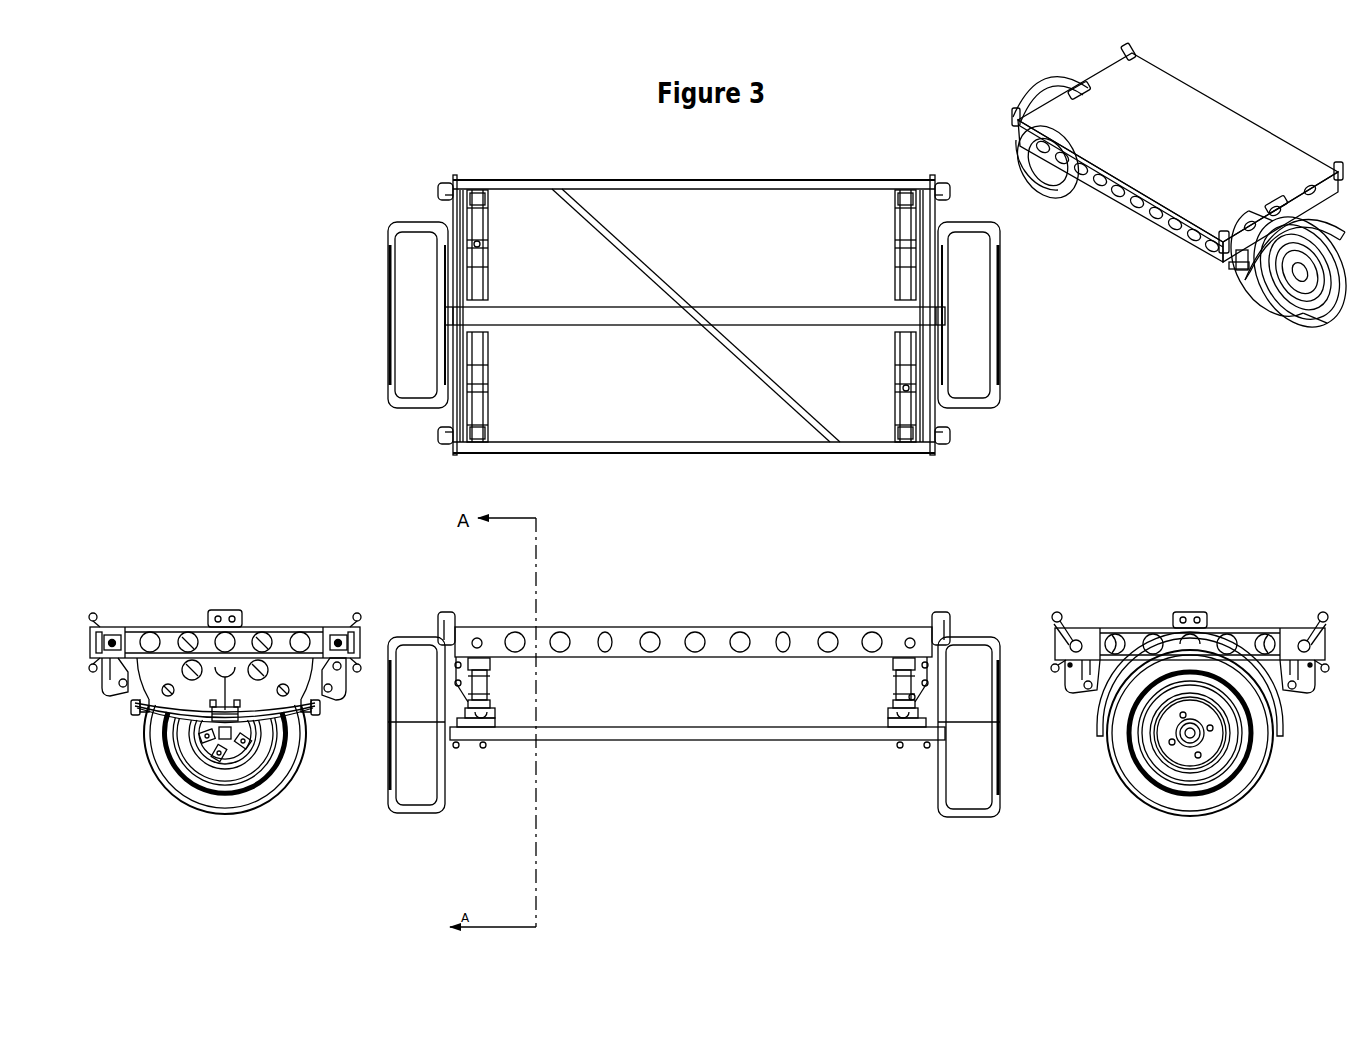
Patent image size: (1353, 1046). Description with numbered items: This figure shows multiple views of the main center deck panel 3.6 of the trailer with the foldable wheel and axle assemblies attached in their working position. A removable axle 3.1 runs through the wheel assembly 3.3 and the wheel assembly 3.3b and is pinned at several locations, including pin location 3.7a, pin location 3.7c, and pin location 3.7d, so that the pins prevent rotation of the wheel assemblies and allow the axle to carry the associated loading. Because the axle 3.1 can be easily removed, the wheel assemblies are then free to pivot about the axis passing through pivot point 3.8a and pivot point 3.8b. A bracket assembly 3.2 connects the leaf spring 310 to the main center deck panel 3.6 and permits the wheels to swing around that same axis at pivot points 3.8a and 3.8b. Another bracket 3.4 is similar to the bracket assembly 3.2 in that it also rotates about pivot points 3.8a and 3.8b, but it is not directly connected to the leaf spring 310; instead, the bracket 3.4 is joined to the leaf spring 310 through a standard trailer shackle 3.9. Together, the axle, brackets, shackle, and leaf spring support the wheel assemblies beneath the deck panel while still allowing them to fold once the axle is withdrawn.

The removable axle 3.1 is at (778, 745).
The bracket assembly 3.2 is at (102, 690).
The wheel assembly 3.3 is at (245, 760).
The wheel assembly 3.3b is at (417, 785).
The bracket 3.4 is at (342, 638).
The main center deck panel 3.6 is at (673, 643).
The pin location 3.7a is at (456, 745).
The pin location 3.7c is at (893, 747).
The pin location 3.7d is at (927, 747).
The pivot point 3.8a is at (477, 643).
The pivot point 3.8b is at (910, 643).
The standard trailer shackle 3.9 is at (337, 677).
The leaf spring 310 is at (912, 697).